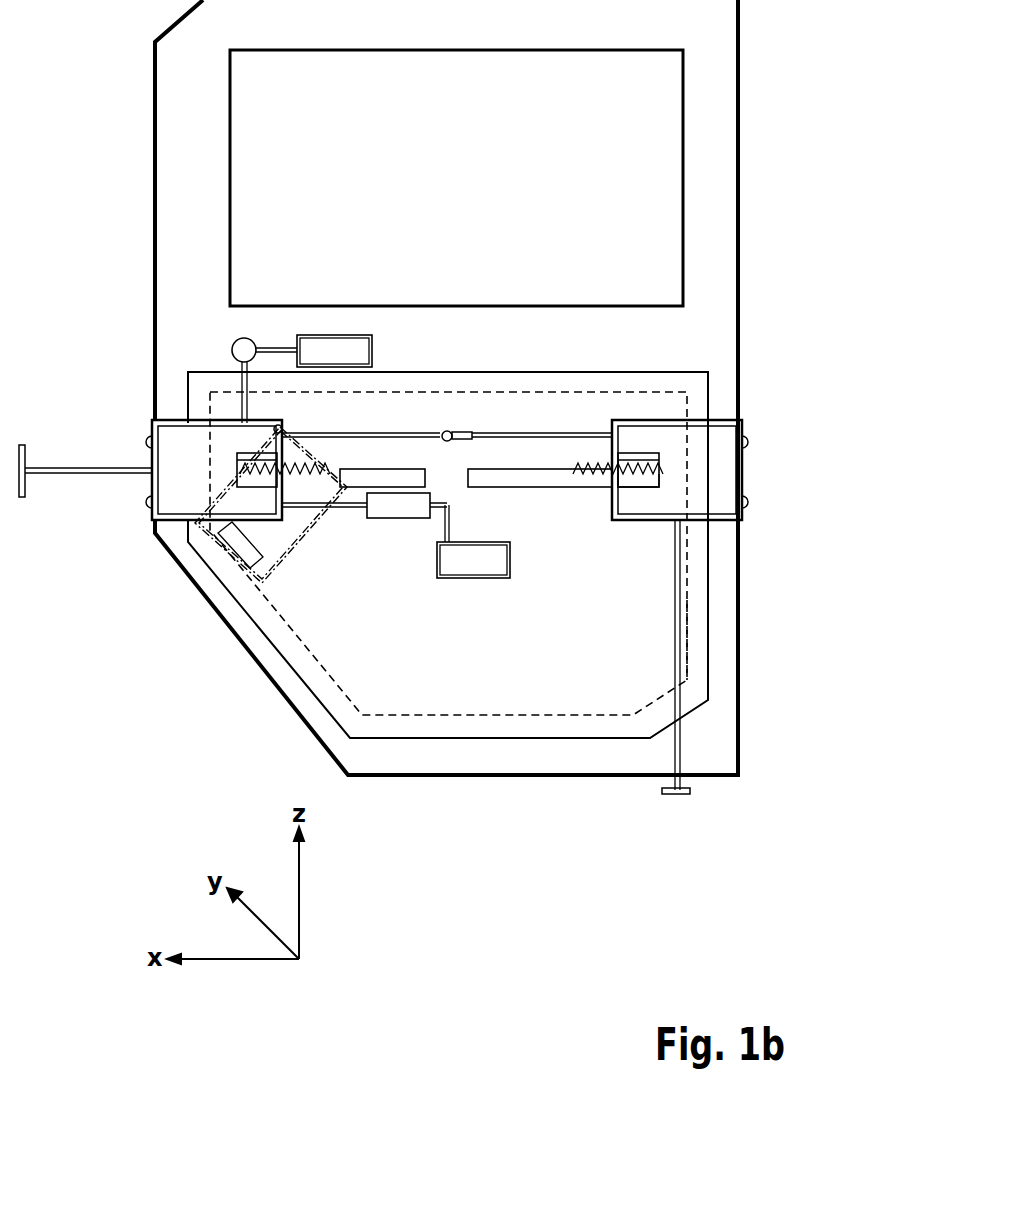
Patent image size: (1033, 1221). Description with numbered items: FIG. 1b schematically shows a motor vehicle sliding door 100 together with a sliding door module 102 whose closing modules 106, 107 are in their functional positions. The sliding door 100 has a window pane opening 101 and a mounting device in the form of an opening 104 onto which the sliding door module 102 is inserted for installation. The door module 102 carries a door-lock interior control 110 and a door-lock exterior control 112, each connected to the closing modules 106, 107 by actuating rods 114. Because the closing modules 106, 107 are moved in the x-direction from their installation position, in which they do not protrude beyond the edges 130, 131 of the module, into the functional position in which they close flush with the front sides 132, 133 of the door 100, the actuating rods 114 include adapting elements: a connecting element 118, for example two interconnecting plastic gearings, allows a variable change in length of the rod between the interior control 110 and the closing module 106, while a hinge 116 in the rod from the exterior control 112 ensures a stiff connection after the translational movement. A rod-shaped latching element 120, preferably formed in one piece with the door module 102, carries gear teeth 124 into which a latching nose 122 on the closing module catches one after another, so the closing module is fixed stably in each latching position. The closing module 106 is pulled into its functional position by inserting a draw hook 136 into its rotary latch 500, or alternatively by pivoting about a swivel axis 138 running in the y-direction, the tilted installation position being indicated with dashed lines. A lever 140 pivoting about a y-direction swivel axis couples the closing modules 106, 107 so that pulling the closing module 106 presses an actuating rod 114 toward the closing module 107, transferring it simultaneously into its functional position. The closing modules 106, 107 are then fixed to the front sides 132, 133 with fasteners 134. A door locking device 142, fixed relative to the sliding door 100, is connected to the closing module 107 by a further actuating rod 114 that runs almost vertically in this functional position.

The motor vehicle sliding door 100 is at (738, 35).
The window pane opening 101 is at (683, 137).
The sliding door module 102 is at (710, 593).
The opening 104 is at (687, 650).
The closing module 106 is at (253, 522).
The closing module 107 is at (612, 495).
The door-lock interior control 110 is at (475, 580).
The door-lock exterior control 112 is at (343, 334).
The actuating rods 114 is at (277, 348).
The hinge 116 is at (244, 338).
The connecting element 118 is at (402, 518).
The latching element 120 is at (352, 478).
The latching nose 122 is at (643, 455).
The gear teeth 124 is at (643, 480).
The edge 130 is at (188, 398).
The edge 131 is at (710, 396).
The front side 132 is at (155, 352).
The front side 133 is at (738, 338).
The fasteners 134 is at (147, 502).
The draw hook 136 is at (25, 457).
The swivel axis 138 is at (283, 428).
The lever 140 is at (452, 434).
The door locking device 142 is at (682, 794).
The rotary latch 500 is at (237, 560).